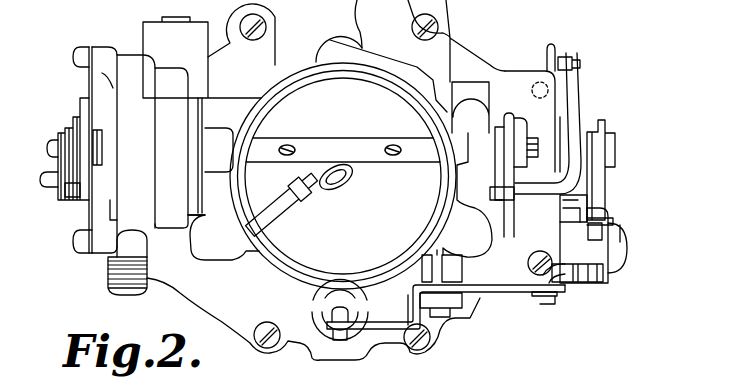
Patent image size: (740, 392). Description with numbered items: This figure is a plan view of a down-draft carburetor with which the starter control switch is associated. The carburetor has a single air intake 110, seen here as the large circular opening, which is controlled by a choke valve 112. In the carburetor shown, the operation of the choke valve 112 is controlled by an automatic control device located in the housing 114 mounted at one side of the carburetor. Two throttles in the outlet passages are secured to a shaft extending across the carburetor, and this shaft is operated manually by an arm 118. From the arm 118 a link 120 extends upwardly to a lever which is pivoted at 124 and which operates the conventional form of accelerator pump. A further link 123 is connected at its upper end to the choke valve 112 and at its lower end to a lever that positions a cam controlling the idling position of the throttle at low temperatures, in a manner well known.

The air intake 110 is at (324, 180).
The choke valve 112 is at (390, 107).
The housing 114 is at (125, 96).
The arm 118 is at (603, 242).
The link 120 is at (626, 267).
The link 123 is at (566, 120).
The pivot 124 is at (450, 318).